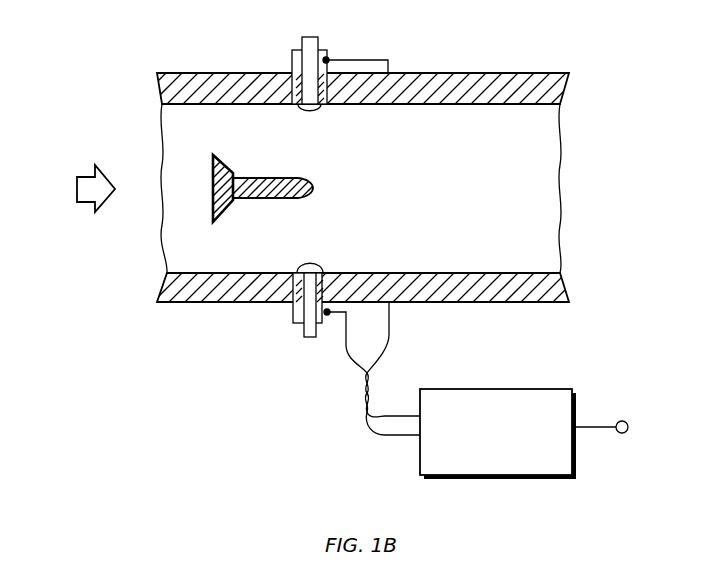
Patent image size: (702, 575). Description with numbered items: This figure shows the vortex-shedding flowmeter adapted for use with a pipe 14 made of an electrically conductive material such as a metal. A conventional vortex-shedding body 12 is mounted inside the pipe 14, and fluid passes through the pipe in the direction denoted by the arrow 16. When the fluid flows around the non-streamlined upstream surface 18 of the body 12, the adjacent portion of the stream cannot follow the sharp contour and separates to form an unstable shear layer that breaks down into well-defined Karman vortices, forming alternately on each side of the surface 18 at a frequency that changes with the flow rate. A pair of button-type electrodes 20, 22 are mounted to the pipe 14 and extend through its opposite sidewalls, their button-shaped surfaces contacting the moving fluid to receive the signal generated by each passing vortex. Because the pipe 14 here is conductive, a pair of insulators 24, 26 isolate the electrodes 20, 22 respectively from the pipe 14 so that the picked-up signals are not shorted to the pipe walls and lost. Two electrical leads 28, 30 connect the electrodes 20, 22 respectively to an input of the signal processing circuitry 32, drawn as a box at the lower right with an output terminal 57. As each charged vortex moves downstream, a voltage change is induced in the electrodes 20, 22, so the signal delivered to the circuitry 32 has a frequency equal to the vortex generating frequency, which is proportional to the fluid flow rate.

The vortex-shedding body 12 is at (274, 200).
The pipe 14 is at (524, 73).
The arrow 16 is at (93, 178).
The upstream surface 18 is at (213, 193).
The button-type electrode 20 is at (311, 37).
The button-type electrode 22 is at (303, 338).
The insulator 24 is at (292, 80).
The insulator 26 is at (293, 304).
The electrical lead 28 is at (352, 365).
The electrical lead 30 is at (391, 320).
The signal processing circuitry 32 is at (525, 389).
The output terminal 57 is at (628, 431).